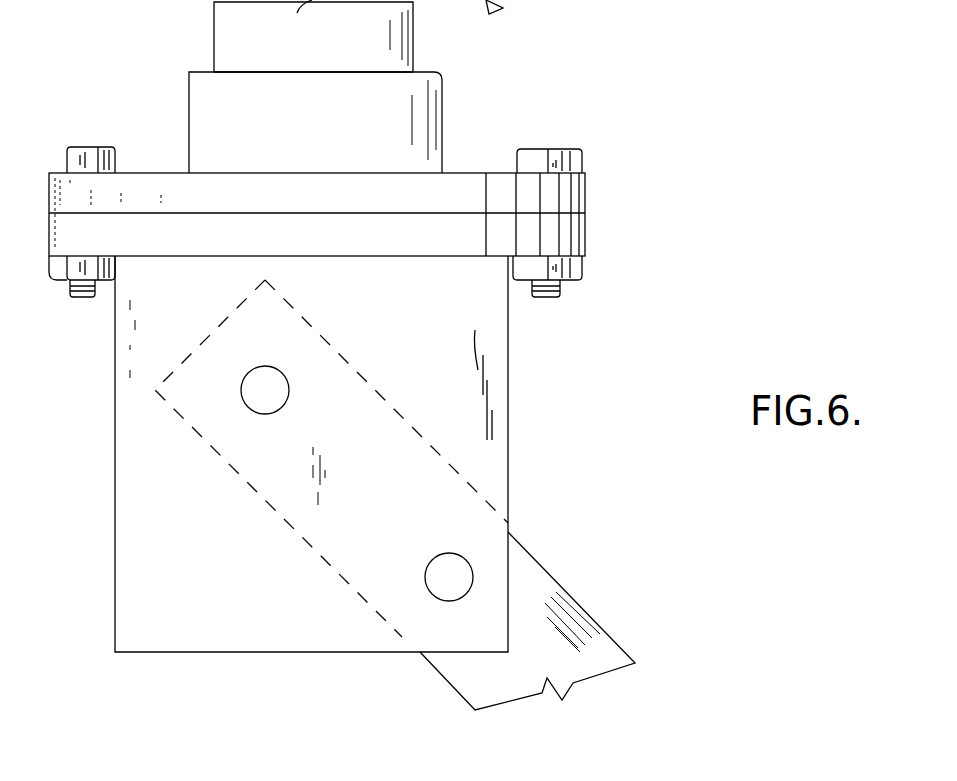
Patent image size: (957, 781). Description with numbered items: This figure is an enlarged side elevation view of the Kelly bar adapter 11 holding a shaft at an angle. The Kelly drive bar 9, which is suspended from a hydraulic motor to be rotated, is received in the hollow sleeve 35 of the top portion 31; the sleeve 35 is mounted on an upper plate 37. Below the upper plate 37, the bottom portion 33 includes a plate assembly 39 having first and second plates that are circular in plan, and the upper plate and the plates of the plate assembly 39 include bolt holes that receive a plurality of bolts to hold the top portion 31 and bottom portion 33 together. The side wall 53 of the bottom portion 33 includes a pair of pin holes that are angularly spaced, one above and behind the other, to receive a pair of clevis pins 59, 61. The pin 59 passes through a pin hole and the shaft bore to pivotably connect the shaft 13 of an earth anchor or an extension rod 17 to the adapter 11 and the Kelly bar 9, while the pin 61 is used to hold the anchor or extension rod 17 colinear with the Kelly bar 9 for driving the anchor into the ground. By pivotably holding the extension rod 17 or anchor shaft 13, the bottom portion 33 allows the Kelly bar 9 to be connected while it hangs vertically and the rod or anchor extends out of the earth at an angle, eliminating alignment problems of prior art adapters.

The Kelly drive bar 9 is at (214, 30).
The Kelly bar adapter 11 is at (667, 152).
The shaft 13 is at (530, 0).
The extension rod 17 is at (546, 595).
The top portion 31 is at (466, 126).
The bottom portion 33 is at (516, 411).
The hollow sleeve 35 is at (425, 93).
The upper plate 37 is at (444, 198).
The plate assembly 39 is at (112, 248).
The side wall 53 is at (496, 455).
The clevis pin 59 is at (278, 398).
The clevis pin 61 is at (435, 573).